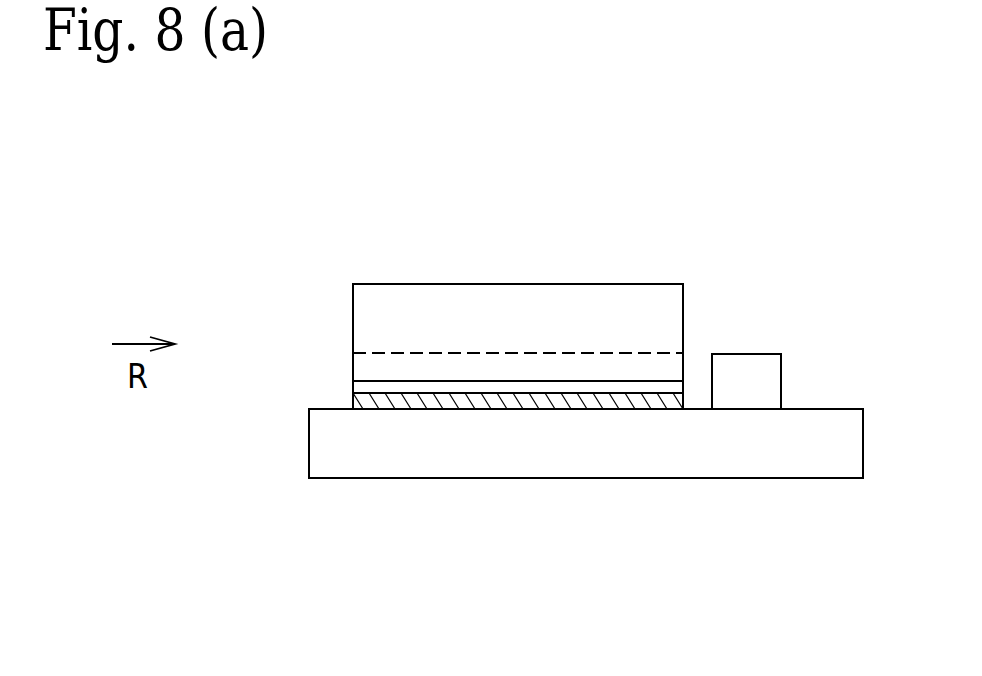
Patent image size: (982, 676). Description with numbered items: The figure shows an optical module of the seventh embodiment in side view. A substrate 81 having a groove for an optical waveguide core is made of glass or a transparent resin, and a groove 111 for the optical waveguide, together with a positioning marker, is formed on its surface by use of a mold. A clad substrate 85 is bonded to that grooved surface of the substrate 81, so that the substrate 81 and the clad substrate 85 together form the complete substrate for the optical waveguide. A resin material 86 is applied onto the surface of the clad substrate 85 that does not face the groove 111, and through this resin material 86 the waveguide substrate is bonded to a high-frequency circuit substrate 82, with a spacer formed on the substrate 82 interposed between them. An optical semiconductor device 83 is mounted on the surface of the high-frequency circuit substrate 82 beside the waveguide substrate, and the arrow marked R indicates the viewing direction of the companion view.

The substrate having a groove for optical waveguide core 81 is at (607, 315).
The high-frequency circuit substrate 82 is at (755, 457).
The optical semiconductor device 83 is at (753, 366).
The clad substrate 85 is at (428, 387).
The resin material 86 is at (488, 402).
The groove for optical waveguide 111 is at (363, 369).